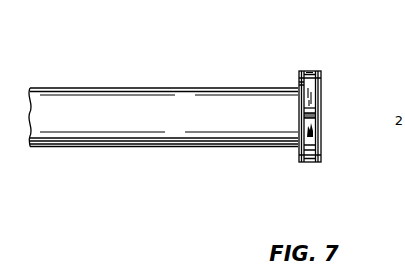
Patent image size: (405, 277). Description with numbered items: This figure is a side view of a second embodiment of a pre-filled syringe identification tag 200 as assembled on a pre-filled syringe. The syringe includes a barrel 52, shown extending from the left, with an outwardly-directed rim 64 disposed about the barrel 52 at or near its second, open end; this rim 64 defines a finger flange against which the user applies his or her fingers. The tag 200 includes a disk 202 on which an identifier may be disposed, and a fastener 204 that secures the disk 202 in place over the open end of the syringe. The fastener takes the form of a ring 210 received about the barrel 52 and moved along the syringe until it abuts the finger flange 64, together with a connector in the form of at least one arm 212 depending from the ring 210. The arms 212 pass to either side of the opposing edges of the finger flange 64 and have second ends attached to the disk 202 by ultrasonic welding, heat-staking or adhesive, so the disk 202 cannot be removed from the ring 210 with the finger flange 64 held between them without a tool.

The barrel 52 is at (137, 147).
The pre-filled syringe identification tag 200 is at (320, 102).
The rim 64 is at (305, 71).
The ring 210 is at (298, 83).
The disk 202 is at (321, 93).
The arm 212 is at (321, 120).
The fastener 204 is at (300, 154).